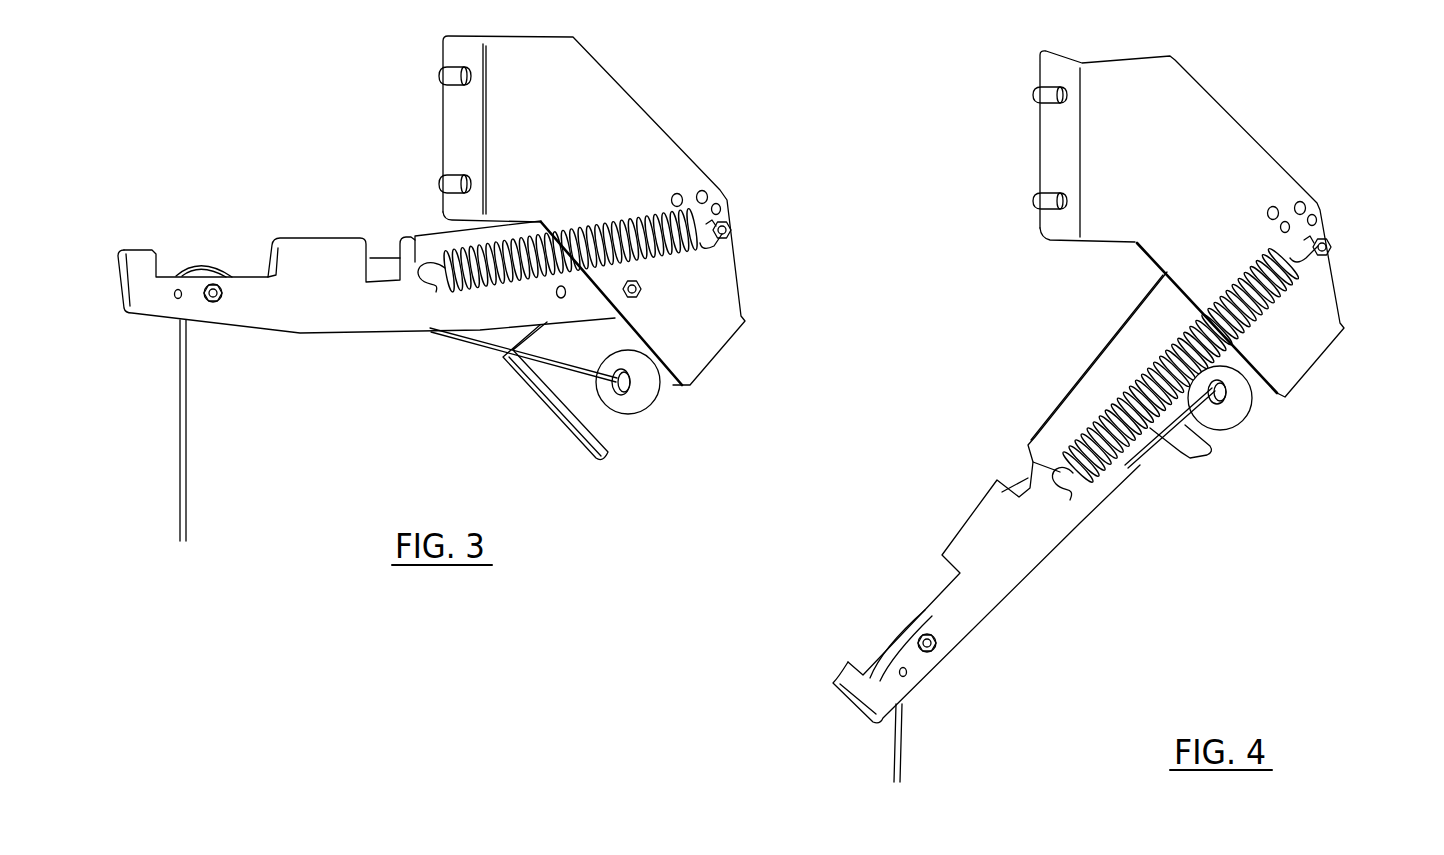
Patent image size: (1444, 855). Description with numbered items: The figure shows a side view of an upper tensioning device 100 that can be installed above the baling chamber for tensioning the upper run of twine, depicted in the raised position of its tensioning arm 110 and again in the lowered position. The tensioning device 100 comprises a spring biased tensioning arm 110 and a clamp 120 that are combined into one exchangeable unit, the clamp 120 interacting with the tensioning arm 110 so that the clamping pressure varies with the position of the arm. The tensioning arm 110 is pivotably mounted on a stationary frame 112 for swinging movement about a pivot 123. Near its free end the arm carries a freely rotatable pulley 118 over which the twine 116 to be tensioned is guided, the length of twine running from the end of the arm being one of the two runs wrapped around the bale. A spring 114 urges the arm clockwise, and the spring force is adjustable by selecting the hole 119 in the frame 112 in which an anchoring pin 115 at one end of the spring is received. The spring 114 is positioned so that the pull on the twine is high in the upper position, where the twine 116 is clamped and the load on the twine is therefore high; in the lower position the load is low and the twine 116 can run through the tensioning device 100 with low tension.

In FIG. 3, the tensioning device 100 is at (402, 160).
In FIG. 3, the tensioning arm 110 is at (313, 262).
In FIG. 4, the tensioning arm 110 is at (960, 527).
In FIG. 3, the stationary frame 112 is at (578, 138).
In FIG. 4, the stationary frame 112 is at (1052, 145).
In FIG. 3, the spring 114 is at (457, 293).
In FIG. 4, the spring 114 is at (1107, 423).
In FIG. 3, the anchoring pin 115 is at (731, 226).
In FIG. 4, the anchoring pin 115 is at (1331, 245).
In FIG. 3, the twine 116 is at (178, 365).
In FIG. 4, the twine 116 is at (893, 758).
In FIG. 3, the pulley 118 is at (203, 267).
In FIG. 4, the pulley 118 is at (900, 633).
In FIG. 3, the hole 119 is at (707, 190).
In FIG. 4, the hole 119 is at (1300, 205).
In FIG. 3, the clamp 120 is at (661, 428).
In FIG. 4, the clamp 120 is at (1260, 428).
In FIG. 3, the pivot 123 is at (643, 290).